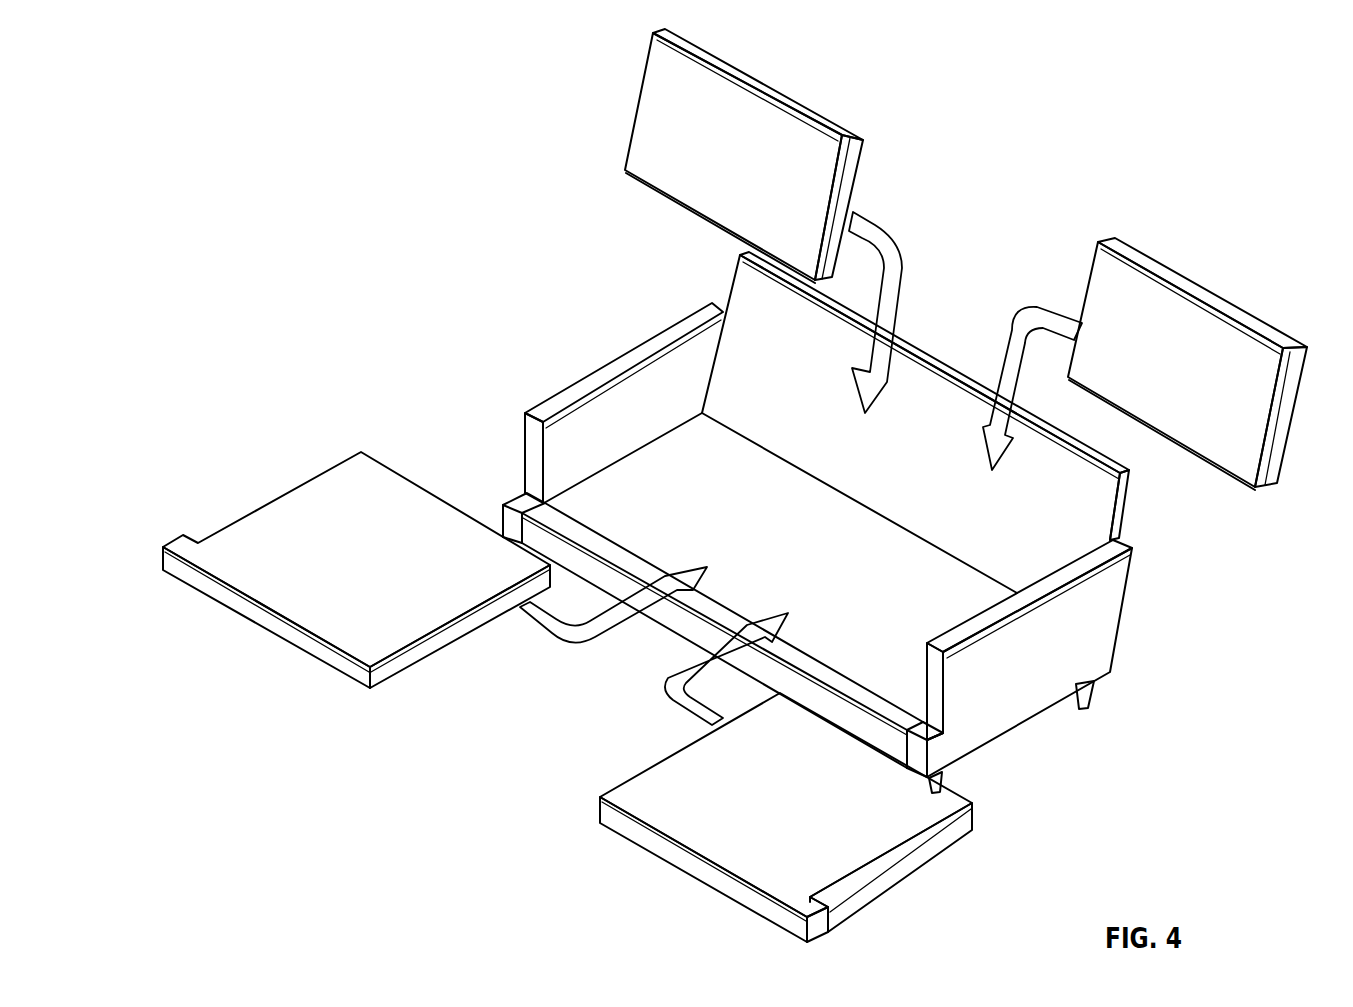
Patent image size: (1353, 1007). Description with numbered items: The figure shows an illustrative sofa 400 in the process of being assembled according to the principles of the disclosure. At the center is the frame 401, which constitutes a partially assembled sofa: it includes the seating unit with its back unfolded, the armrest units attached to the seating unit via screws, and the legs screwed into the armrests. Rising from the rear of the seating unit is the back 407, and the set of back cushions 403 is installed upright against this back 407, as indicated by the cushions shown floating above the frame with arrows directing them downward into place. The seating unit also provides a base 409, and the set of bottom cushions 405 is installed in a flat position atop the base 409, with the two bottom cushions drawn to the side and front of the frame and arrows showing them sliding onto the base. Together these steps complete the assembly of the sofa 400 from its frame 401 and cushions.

The sofa 400 is at (735, 485).
The frame 401 is at (1100, 632).
The set of back cushions 403 is at (858, 172).
The set of bottom cushions 405 is at (398, 660).
The back 407 is at (953, 375).
The base 409 is at (720, 603).